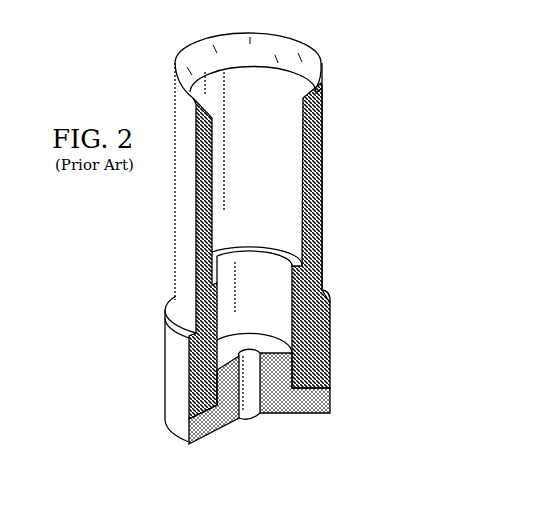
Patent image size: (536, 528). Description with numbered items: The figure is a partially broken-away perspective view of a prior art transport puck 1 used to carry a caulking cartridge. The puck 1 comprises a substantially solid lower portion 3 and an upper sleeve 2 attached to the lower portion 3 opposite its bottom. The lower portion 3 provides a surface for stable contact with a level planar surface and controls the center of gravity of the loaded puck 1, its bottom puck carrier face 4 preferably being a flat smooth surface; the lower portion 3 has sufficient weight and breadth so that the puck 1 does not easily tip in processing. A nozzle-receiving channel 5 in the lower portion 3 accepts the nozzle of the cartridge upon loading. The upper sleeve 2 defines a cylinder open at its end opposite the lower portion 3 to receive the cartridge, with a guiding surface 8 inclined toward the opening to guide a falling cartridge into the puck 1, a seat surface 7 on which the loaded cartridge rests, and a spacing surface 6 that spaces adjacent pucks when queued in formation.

The puck 1 is at (322, 147).
The upper sleeve 2 is at (322, 183).
The lower portion 3 is at (333, 395).
The bottom puck carrier face 4 is at (294, 414).
The nozzle-receiving channel 5 is at (245, 408).
The spacing surface 6 is at (165, 300).
The seat surface 7 is at (249, 246).
The guiding surface 8 is at (302, 50).